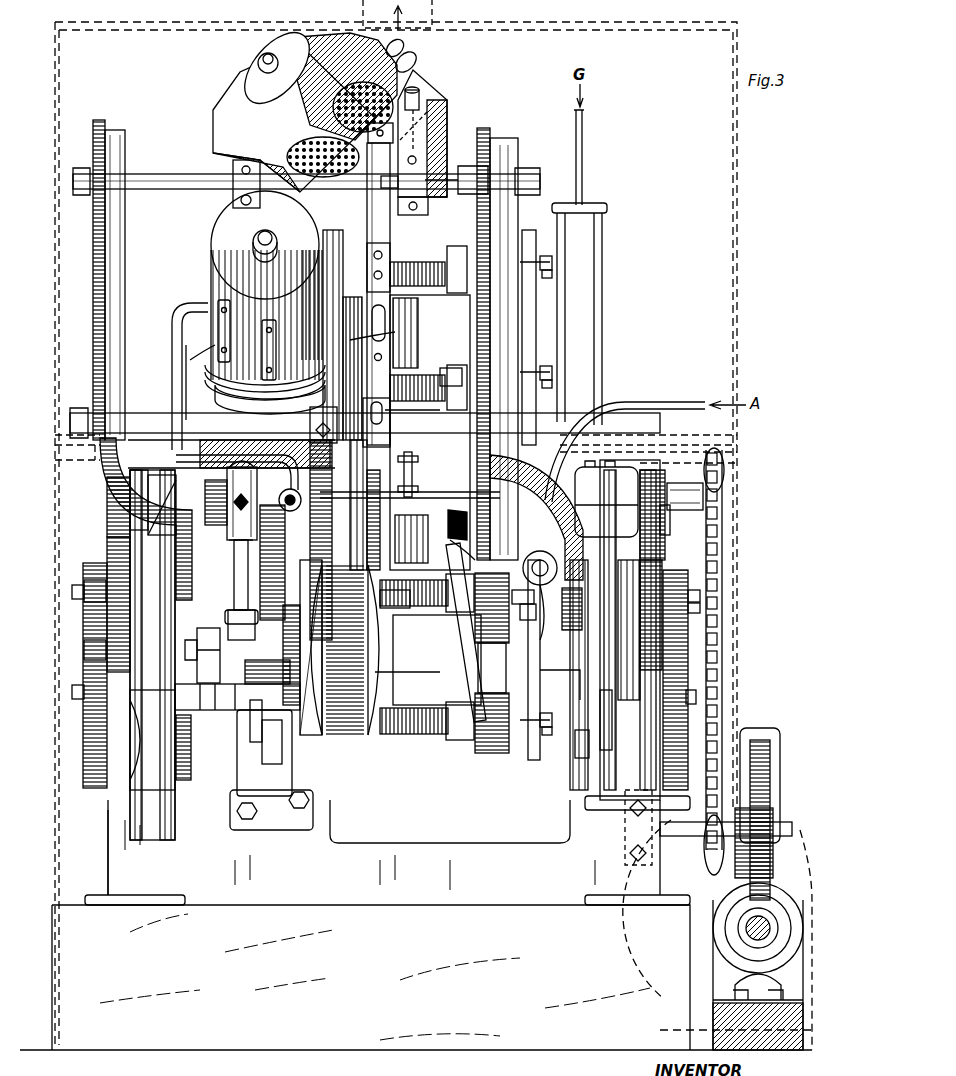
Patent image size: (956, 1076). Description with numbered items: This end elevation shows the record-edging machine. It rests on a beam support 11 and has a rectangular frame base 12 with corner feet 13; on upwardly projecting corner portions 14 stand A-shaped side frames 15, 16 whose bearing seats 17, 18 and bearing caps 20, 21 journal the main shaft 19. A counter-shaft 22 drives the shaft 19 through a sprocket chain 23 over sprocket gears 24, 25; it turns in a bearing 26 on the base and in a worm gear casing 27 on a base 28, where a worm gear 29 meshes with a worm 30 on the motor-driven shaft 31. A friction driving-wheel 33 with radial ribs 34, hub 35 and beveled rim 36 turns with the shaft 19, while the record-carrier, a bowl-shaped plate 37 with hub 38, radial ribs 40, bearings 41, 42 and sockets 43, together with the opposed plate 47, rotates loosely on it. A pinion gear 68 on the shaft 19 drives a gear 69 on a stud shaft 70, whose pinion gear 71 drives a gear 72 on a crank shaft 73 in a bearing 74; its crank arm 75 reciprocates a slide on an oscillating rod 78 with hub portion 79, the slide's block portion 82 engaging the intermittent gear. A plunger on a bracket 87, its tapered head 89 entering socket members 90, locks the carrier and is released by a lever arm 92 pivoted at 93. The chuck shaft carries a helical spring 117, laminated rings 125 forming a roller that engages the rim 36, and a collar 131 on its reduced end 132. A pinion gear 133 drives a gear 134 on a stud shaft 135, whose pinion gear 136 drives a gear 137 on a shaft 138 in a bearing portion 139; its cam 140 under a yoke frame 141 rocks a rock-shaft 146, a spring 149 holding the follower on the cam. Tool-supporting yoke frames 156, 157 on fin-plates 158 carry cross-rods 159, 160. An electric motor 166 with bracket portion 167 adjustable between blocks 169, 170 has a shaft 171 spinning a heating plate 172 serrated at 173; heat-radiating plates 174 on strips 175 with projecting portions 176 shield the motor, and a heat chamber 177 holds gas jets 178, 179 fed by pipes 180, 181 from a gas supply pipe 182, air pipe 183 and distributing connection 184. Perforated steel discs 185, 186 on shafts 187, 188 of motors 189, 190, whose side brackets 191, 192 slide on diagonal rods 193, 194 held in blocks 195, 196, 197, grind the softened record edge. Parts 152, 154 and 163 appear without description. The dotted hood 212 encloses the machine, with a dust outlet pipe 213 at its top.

The beam support 11 is at (416, 977).
The rectangular frame base 12 is at (346, 849).
The corner feet 13 is at (158, 790).
The corner portions 14 is at (108, 806).
The side frame 15 is at (128, 745).
The side frame 16 is at (640, 726).
The bearing seat 17 is at (148, 527).
The bearing seat 18 is at (665, 536).
The main shaft 19 is at (105, 490).
The bearing cap 20 is at (107, 495).
The bearing cap 21 is at (608, 468).
The counter-shaft 22 is at (674, 822).
The sprocket chain 23 is at (722, 570).
The sprocket gear 24 is at (726, 476).
The sprocket gear 25 is at (712, 876).
The bearing 26 is at (625, 860).
The worm gear casing 27 is at (765, 730).
The base 28 is at (758, 975).
The worm gear 29 is at (772, 771).
The worm 30 is at (804, 872).
The motor-driven shaft 31 is at (735, 941).
The friction driving-wheel 33 is at (466, 632).
The radial reinforcing ribs 34 is at (452, 548).
The hub 35 is at (447, 534).
The beveled peripheral rim 36 is at (500, 676).
The bowl-shaped plate 37 is at (375, 680).
The elongated hub 38 is at (435, 489).
The radial ribs 40 is at (435, 500).
The bearing 41 is at (462, 250).
The bearing 42 is at (385, 612).
The sockets 43 is at (407, 540).
The plate 47 is at (268, 580).
The pinion gear 68 is at (100, 505).
The gear 69 is at (110, 550).
The stud shaft 70 is at (74, 590).
The pinion gear 71 is at (90, 597).
The gear 72 is at (92, 655).
The crank shaft 73 is at (76, 697).
The bearing 74 is at (226, 635).
The crank arm 75 is at (202, 655).
The oscillating rod 78 is at (236, 563).
The hub portion 79 is at (218, 546).
The projecting block portion 82 is at (259, 672).
The bracket 87 is at (250, 740).
The tapered head 89 is at (210, 716).
The socket members 90 is at (280, 515).
The lever arm 92 is at (208, 766).
The pivot 93 is at (125, 706).
The helical spring 117 is at (420, 745).
The rings 125 is at (490, 742).
The collar 131 is at (543, 495).
The reduced end 132 is at (540, 279).
The pinion gear 133 is at (665, 519).
The gear 134 is at (664, 555).
The stud shaft 135 is at (705, 596).
The pinion gear 136 is at (700, 607).
The gear 137 is at (675, 678).
The shaft 138 is at (697, 698).
The bearing portion 139 is at (640, 712).
The cam 140 is at (573, 750).
The yoke frame 141 is at (552, 680).
The rock-shaft 146 is at (545, 640).
The spring 149 is at (570, 630).
The pin 152 is at (535, 599).
The block 154 is at (527, 620).
The tool-supporting yoke frame 156 is at (113, 258).
The tool-supporting yoke frame 157 is at (512, 250).
The fin-plates 158 is at (640, 522).
The cross-rod 159 is at (68, 421).
The cross-rod 160 is at (182, 186).
The block 163 is at (325, 424).
The electric motor 166 is at (230, 225).
The projecting bracket portion 167 is at (392, 250).
The block 169 is at (376, 422).
The block 170 is at (400, 182).
The shaft 171 is at (272, 236).
The heating plate 172 is at (222, 376).
The serrations 173 is at (185, 358).
The heat-radiating plates 174 is at (170, 315).
The strips 175 is at (228, 340).
The projecting portions 176 is at (264, 355).
The cylindrical heat chamber 177 is at (215, 404).
The gas jet 178 is at (205, 272).
The gas jet 179 is at (400, 336).
The pipe 180 is at (172, 341).
The pipe 181 is at (400, 356).
The gas supply pipe 182 is at (585, 158).
The air pipe 183 is at (630, 400).
The distributing connection 184 is at (403, 470).
The perforated steel disc 185 is at (366, 195).
The perforated steel disc 186 is at (396, 215).
The shaft 187 is at (268, 48).
The shaft 188 is at (402, 48).
The motor 189 is at (345, 32).
The motor 190 is at (414, 60).
The side bracket 191 is at (215, 118).
The side bracket 192 is at (420, 97).
The diagonally-disposed rod 193 is at (236, 200).
The diagonally-disposed rod 194 is at (447, 112).
The block 195 is at (228, 145).
The block 196 is at (262, 58).
The block 197 is at (416, 100).
The hood 212 is at (737, 210).
The outlet pipe 213 is at (435, 12).